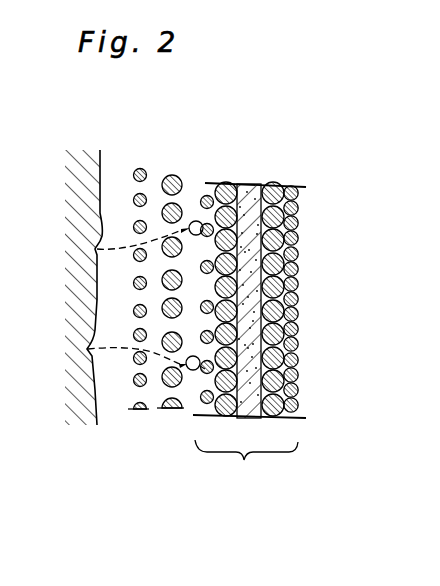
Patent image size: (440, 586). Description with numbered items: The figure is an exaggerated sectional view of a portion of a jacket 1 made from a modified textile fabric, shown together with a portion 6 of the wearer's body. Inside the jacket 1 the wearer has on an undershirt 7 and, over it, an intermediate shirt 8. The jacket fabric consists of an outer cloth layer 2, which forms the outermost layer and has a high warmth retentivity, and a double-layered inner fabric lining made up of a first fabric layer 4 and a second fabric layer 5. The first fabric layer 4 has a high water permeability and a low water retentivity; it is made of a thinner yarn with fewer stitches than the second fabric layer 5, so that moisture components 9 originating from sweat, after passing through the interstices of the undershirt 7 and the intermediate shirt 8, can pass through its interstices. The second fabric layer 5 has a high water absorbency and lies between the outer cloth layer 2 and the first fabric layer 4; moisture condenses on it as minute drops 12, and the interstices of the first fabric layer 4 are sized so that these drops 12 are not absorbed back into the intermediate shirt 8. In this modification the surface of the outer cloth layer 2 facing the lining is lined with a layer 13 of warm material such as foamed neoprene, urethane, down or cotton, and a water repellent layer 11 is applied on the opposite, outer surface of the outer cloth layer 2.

The jacket 1 is at (246, 461).
The outer cloth layer 2 is at (274, 183).
The first fabric layer 4 is at (196, 416).
The second fabric layer 5 is at (228, 186).
The body portion 6 is at (78, 302).
The undershirt 7 is at (135, 413).
The intermediate shirt 8 is at (165, 412).
The moisture components 9 is at (107, 352).
The water repellent layer 11 is at (294, 184).
The minute drops 12 is at (195, 221).
The layer of warm material 13 is at (243, 418).